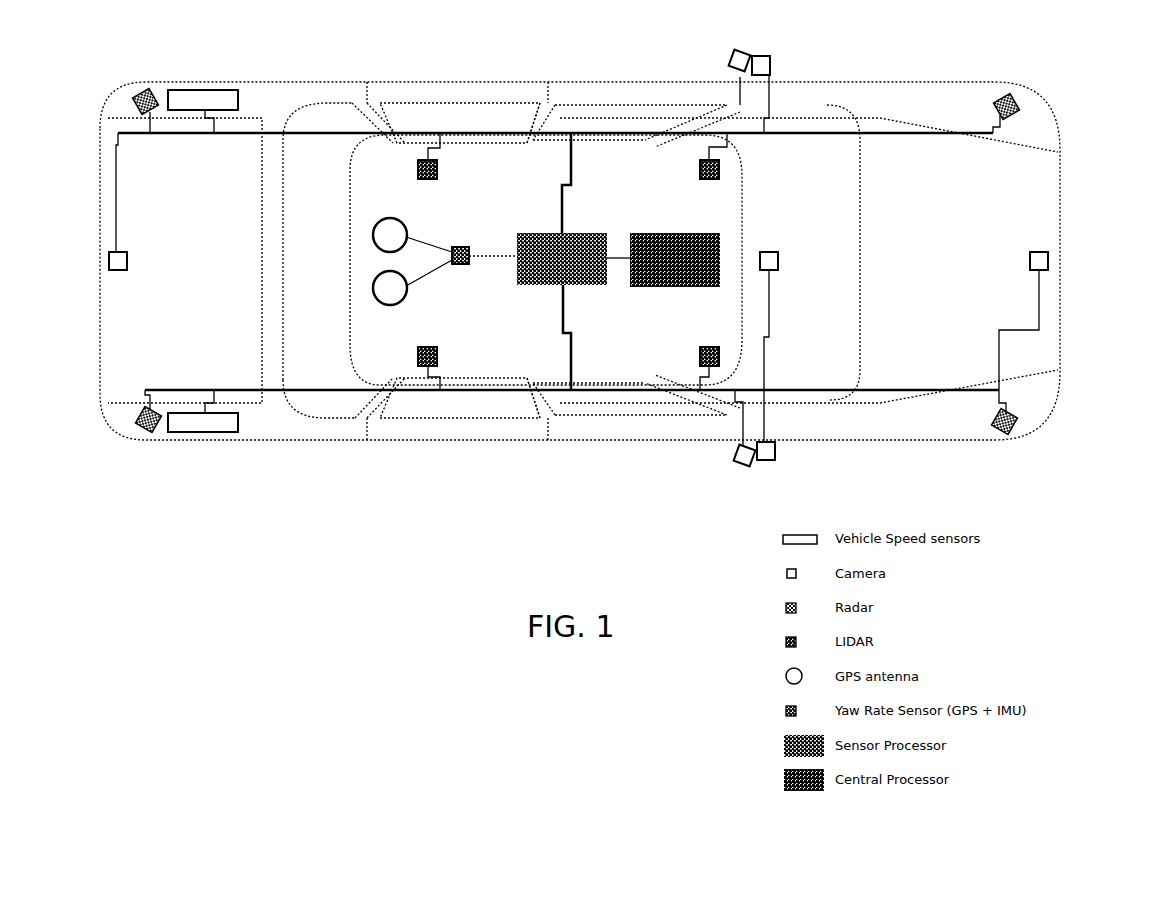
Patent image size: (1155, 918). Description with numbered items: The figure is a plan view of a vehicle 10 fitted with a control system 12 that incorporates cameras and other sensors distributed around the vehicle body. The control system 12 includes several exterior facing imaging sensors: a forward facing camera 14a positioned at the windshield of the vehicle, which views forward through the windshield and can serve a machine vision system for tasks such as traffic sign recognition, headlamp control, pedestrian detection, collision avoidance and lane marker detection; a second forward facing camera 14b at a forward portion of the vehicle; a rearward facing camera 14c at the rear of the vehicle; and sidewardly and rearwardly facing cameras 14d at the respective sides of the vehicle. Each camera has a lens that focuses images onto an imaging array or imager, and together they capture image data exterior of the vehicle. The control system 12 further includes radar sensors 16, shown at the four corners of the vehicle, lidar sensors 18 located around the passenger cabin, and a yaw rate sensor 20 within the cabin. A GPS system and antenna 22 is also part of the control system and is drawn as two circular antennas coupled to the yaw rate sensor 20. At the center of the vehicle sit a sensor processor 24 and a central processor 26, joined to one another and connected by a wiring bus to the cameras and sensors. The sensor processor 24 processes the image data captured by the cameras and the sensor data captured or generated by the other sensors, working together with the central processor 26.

The vehicle 10 is at (360, 499).
The control system 12 is at (610, 150).
The forward facing camera 14a is at (774, 264).
The forward facing camera 14b is at (1050, 260).
The rearward facing camera 14c is at (112, 268).
The sidewardly/rearwardly facing cameras 14d is at (771, 60).
The radar sensor 16 is at (137, 98).
The lidar sensor 18 is at (438, 173).
The yaw rate sensor 20 is at (458, 267).
The GPS system and antenna 22 is at (382, 236).
The sensor processor 24 is at (590, 240).
The central processor 26 is at (690, 240).